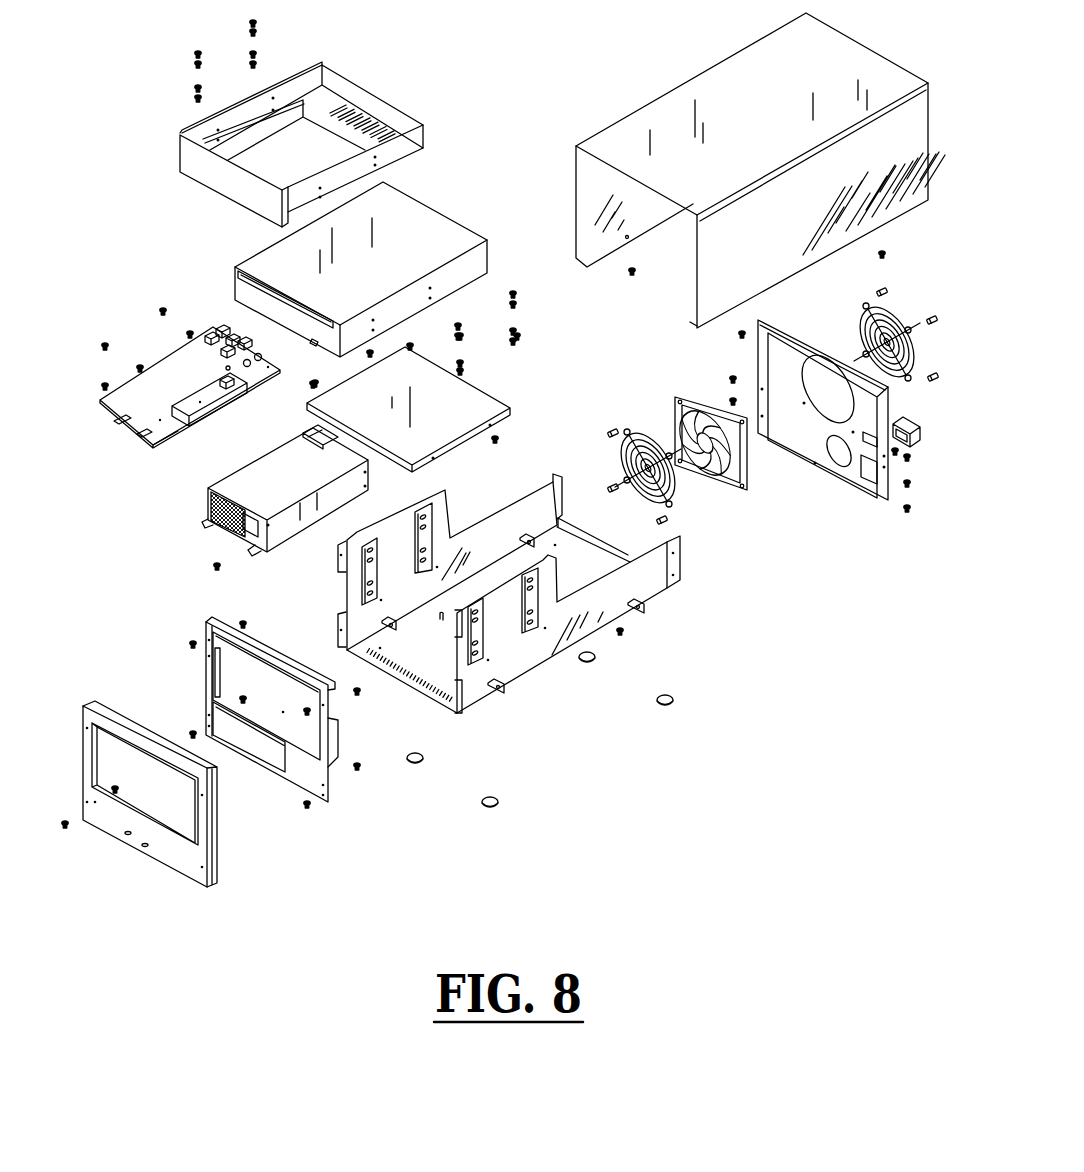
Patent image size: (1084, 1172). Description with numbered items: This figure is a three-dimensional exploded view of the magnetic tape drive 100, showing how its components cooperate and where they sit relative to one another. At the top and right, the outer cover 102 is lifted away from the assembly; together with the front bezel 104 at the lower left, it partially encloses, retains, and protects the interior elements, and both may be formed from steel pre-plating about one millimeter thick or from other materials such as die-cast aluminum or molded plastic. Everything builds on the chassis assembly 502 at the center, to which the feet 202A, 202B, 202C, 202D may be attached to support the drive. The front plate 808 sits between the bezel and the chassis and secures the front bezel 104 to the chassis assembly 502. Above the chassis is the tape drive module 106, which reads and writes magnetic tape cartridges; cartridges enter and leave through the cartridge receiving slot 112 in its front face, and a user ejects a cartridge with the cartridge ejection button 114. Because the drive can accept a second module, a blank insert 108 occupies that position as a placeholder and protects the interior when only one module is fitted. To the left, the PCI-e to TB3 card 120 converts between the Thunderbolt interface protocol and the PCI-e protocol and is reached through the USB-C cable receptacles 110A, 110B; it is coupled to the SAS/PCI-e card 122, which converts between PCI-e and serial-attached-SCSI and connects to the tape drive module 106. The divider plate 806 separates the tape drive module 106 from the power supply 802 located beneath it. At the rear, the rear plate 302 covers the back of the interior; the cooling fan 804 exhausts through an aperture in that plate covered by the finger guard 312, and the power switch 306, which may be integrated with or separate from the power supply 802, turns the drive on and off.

The magnetic tape drive 100 is at (715, 835).
The outer cover 102 is at (732, 100).
The front bezel 104 is at (185, 865).
The tape drive module 106 is at (408, 223).
The blank insert 108 is at (230, 175).
The USB-C cable receptacle 110A is at (121, 430).
The USB-C cable receptacle 110B is at (139, 444).
The cartridge receiving slot 112 is at (243, 283).
The cartridge ejection button 114 is at (318, 342).
The PCI-e to TB3 card 120 is at (168, 433).
The SAS/PCI-e card 122 is at (163, 387).
The front foot 202A is at (424, 757).
The front foot 202B is at (499, 801).
The foot 202C is at (674, 700).
The foot 202D is at (596, 655).
The rear plate 302 is at (800, 432).
The power switch 306 is at (915, 443).
The finger guard 312 is at (893, 322).
The chassis assembly 502 is at (518, 662).
The power supply 802 is at (233, 488).
The cooling fan 804 is at (692, 388).
The divider plate 806 is at (458, 408).
The front plate 808 is at (205, 702).